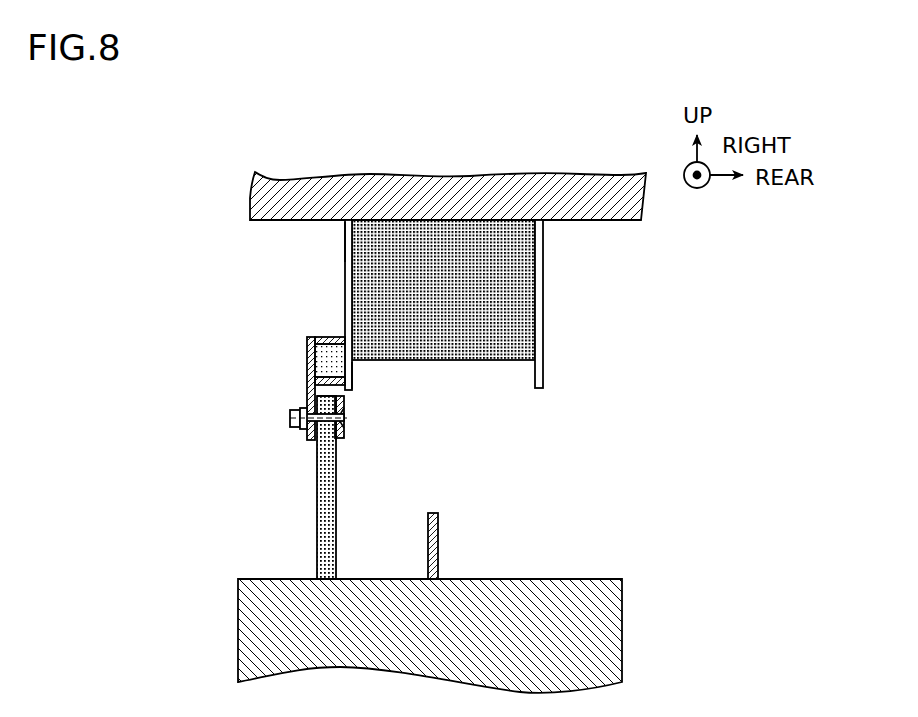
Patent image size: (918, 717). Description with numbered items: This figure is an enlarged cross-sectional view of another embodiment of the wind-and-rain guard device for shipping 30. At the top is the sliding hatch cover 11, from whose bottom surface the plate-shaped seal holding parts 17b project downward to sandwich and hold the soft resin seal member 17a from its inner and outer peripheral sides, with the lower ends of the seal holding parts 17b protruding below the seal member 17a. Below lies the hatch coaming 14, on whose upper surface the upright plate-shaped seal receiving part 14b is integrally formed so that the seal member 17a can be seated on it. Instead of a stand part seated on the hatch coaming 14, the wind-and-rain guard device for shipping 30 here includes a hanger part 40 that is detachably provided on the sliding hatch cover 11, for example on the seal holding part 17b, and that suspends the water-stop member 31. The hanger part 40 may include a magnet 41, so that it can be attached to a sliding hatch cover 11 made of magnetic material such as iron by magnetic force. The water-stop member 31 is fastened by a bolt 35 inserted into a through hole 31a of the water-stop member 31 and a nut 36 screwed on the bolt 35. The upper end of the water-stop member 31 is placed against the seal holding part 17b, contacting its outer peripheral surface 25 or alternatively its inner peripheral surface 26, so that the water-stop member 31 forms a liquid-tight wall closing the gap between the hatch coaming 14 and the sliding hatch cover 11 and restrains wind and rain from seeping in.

The sliding hatch cover 11 is at (633, 233).
The hatch coaming 14 is at (623, 563).
The seal receiving part 14b is at (433, 513).
The seal member 17a is at (477, 361).
The seal holding part 17b is at (345, 286).
The outer peripheral surface 25 is at (345, 237).
The inner peripheral surface 26 is at (356, 369).
The wind-and-rain guard device for shipping 30 is at (316, 445).
The water-stop member 31 is at (313, 479).
The through hole 31a is at (339, 447).
The bolt 35 is at (350, 412).
The nut 36 is at (300, 429).
The hanger part 40 is at (298, 392).
The magnet 41 is at (332, 357).